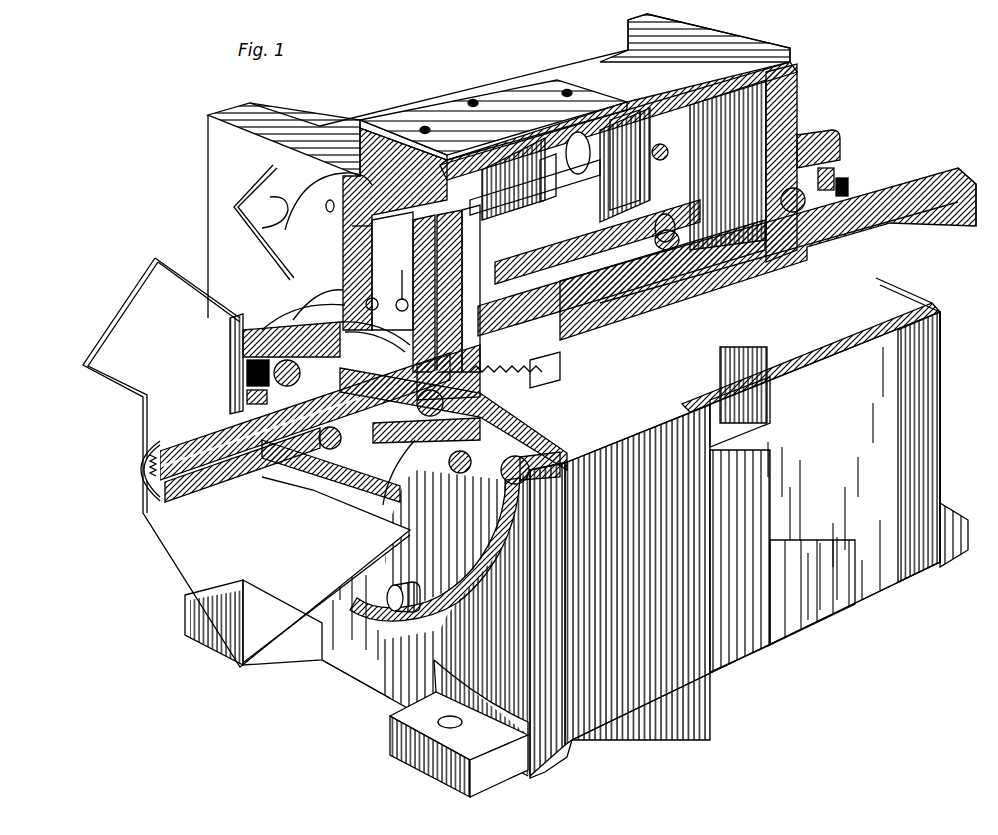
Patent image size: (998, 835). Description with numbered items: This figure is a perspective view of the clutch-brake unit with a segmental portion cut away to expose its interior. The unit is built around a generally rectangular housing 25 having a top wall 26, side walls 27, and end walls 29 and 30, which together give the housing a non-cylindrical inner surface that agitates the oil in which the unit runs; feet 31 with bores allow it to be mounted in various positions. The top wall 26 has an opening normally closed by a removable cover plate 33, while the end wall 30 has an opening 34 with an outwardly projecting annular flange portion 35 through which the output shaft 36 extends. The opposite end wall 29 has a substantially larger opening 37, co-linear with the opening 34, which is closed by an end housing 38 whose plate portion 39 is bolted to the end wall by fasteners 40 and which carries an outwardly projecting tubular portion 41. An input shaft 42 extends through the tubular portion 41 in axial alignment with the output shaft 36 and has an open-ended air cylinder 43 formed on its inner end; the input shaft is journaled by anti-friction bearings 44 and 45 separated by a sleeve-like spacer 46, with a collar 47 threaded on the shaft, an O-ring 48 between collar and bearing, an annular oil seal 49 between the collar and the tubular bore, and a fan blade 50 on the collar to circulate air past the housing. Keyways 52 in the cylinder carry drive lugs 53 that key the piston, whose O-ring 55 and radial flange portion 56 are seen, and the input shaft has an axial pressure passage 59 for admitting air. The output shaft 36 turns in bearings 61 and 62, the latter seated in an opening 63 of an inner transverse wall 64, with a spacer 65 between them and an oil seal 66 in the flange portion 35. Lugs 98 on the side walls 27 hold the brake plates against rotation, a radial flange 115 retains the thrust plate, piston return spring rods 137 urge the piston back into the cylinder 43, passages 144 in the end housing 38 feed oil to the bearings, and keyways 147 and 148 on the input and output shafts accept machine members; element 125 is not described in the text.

The housing 25 is at (757, 652).
The top wall 26 is at (585, 68).
The side walls 27 is at (793, 526).
The end wall 29 is at (372, 676).
The end wall 30 is at (943, 390).
The feet 31 is at (197, 636).
The cover plate 33 is at (514, 95).
The opening 34 is at (742, 212).
The annular flange portion 35 is at (812, 133).
The output shaft 36 is at (912, 178).
The opening 37 is at (352, 226).
The end housing 38 is at (290, 318).
The plate portion 39 is at (345, 206).
The fasteners 40 is at (272, 200).
The tubular portion 41 is at (236, 320).
The input shaft 42 is at (200, 430).
The air cylinder 43 is at (466, 288).
The anti-friction bearing 44 is at (246, 376).
The anti-friction bearing 45 is at (402, 296).
The spacer 46 is at (326, 344).
The collar 47 is at (246, 398).
The O-ring 48 is at (283, 414).
The oil seal 49 is at (250, 355).
The fan blade 50 is at (128, 313).
The keyways 52 is at (490, 155).
The drive lugs 53 is at (508, 152).
The O-ring 55 is at (453, 407).
The radial flange portion 56 is at (528, 140).
The pressure passage 59 is at (195, 440).
The anti-friction bearing 61 is at (830, 168).
The anti-friction bearing 62 is at (670, 214).
The opening 63 is at (698, 230).
The transverse wall 64 is at (668, 150).
The spacer 65 is at (702, 212).
The oil seal 66 is at (846, 182).
The lugs 98 is at (721, 398).
The radial flange 115 is at (547, 370).
The guide 125 is at (626, 160).
The piston return spring rods 137 is at (528, 432).
The passages 144 is at (368, 302).
The keyway 147 is at (148, 497).
The keyway 148 is at (960, 224).